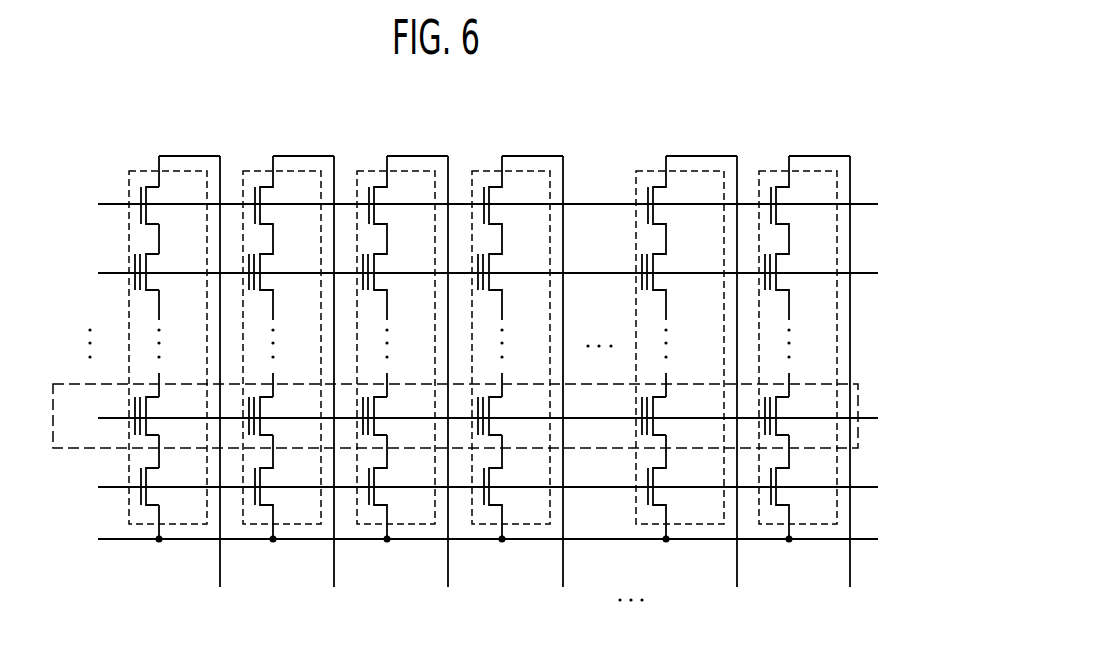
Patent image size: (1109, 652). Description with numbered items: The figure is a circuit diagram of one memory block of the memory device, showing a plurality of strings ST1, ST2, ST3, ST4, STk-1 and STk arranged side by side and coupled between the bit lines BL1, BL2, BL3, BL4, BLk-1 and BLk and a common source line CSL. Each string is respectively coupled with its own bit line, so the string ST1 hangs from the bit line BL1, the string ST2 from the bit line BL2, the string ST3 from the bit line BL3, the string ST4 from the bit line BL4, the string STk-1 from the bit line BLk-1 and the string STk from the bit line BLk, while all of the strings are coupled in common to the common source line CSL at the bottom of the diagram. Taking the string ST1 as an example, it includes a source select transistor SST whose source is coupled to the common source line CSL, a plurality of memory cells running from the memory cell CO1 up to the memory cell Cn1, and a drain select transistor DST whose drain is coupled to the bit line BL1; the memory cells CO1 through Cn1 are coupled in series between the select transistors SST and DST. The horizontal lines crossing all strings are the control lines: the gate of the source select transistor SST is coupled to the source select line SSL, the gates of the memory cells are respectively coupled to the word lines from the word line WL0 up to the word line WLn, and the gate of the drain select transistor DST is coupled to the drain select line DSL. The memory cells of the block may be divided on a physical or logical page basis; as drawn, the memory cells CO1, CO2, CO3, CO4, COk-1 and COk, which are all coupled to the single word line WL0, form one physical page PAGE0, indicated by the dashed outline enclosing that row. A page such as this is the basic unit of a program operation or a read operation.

The string ST1 is at (142, 171).
The string ST2 is at (256, 171).
The string ST3 is at (370, 171).
The string ST4 is at (485, 171).
The string STk-1 is at (648, 171).
The string STk is at (772, 171).
The drain select line DSL is at (470, 207).
The word line WLn is at (470, 277).
The word line WL0 is at (470, 421).
The source select line SSL is at (470, 490).
The common source line CSL is at (470, 542).
The drain select transistor DST is at (169, 202).
The memory cell Cn1 is at (163, 269).
The memory cell CO1 is at (164, 414).
The memory cell CO2 is at (279, 414).
The memory cell CO3 is at (393, 414).
The memory cell CO4 is at (508, 414).
The memory cell COk-1 is at (684, 414).
The memory cell COk is at (795, 414).
The source select transistor SST is at (168, 483).
The physical page PAGE0 is at (858, 384).
The bit line BL1 is at (220, 387).
The bit line BL2 is at (334, 387).
The bit line BL3 is at (448, 387).
The bit line BL4 is at (563, 387).
The bit line BLk-1 is at (746, 387).
The bit line BLk is at (855, 387).